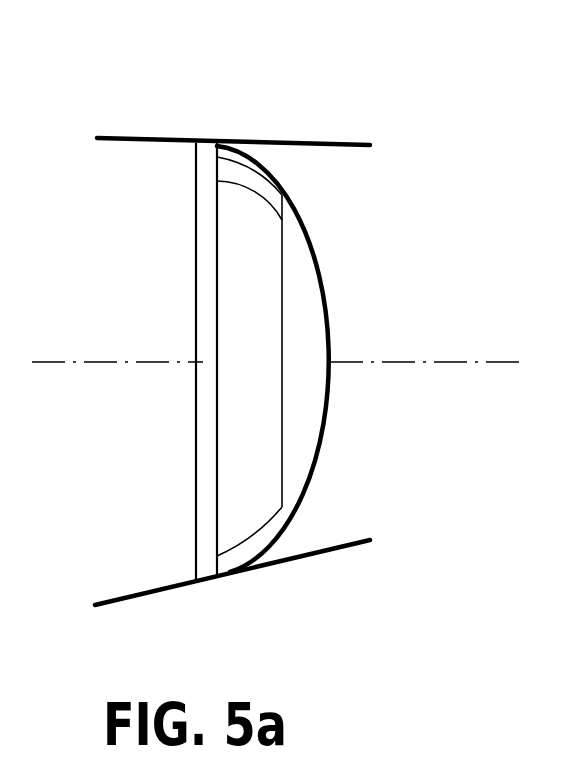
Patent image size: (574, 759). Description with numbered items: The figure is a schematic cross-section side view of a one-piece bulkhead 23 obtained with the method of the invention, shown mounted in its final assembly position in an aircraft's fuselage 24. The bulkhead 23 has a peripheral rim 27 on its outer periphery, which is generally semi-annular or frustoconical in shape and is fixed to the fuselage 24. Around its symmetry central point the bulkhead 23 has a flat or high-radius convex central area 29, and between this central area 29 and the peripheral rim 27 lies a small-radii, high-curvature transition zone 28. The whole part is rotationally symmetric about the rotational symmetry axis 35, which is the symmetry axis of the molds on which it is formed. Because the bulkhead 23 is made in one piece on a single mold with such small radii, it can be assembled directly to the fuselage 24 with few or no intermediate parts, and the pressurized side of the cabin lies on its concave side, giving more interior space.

The bulkhead 23 is at (340, 297).
The aircraft's fuselage 24 is at (138, 136).
The peripheral rim 27 is at (205, 152).
The transition zone 28 is at (240, 170).
The central area 29 is at (325, 348).
The rotational symmetry axis 35 is at (397, 363).